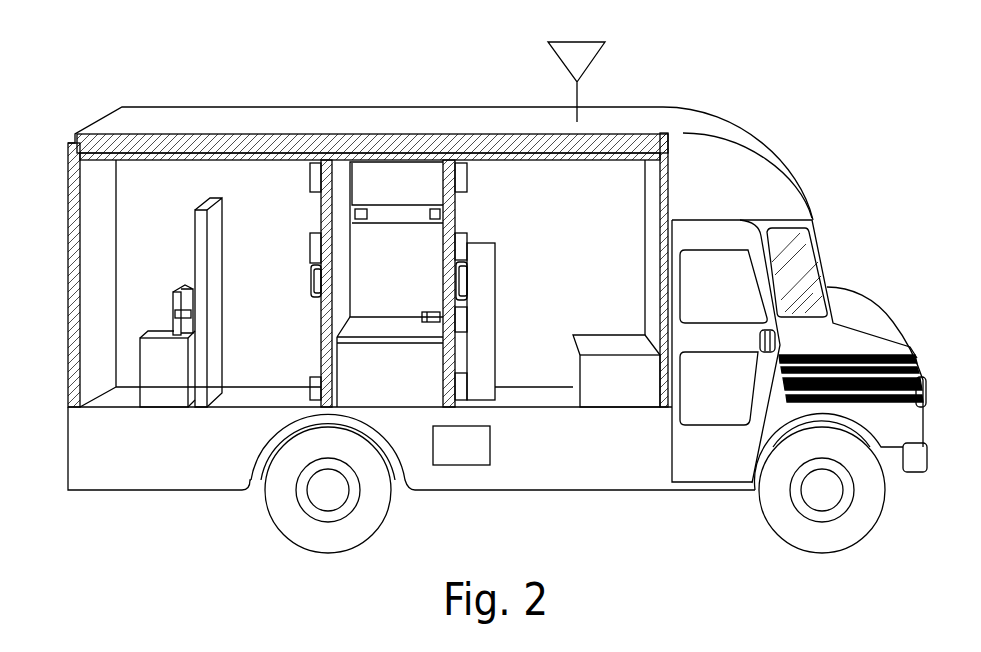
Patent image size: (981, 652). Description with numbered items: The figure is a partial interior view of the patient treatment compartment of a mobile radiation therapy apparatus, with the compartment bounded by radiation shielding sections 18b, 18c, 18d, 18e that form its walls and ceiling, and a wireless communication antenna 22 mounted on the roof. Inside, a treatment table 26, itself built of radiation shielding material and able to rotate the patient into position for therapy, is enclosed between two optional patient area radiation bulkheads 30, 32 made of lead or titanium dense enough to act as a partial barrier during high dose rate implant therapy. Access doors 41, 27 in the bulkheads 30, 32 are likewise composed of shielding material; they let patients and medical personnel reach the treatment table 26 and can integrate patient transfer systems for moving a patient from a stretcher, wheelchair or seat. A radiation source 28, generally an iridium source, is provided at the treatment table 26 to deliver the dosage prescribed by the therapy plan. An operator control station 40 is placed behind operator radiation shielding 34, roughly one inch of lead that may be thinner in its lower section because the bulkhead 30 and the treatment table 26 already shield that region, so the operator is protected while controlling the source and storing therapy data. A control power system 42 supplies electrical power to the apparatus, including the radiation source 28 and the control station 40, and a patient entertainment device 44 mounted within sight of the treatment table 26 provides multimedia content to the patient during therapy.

The radiation shielding section 18b is at (663, 188).
The radiation shielding section 18c is at (70, 165).
The radiation shielding section 18d is at (590, 286).
The radiation shielding section 18e is at (492, 153).
The wireless communication antenna 22 is at (234, 107).
The treatment table 26 is at (385, 323).
The access door 27 is at (470, 285).
The radiation source 28 is at (433, 312).
The patient area radiation bulkhead 30 is at (316, 200).
The patient area radiation bulkhead 32 is at (456, 202).
The operator radiation shielding 34 is at (216, 238).
The operator control station 40 is at (180, 292).
The access door 41 is at (310, 280).
The control power system 42 is at (634, 396).
The patient entertainment device 44 is at (386, 196).